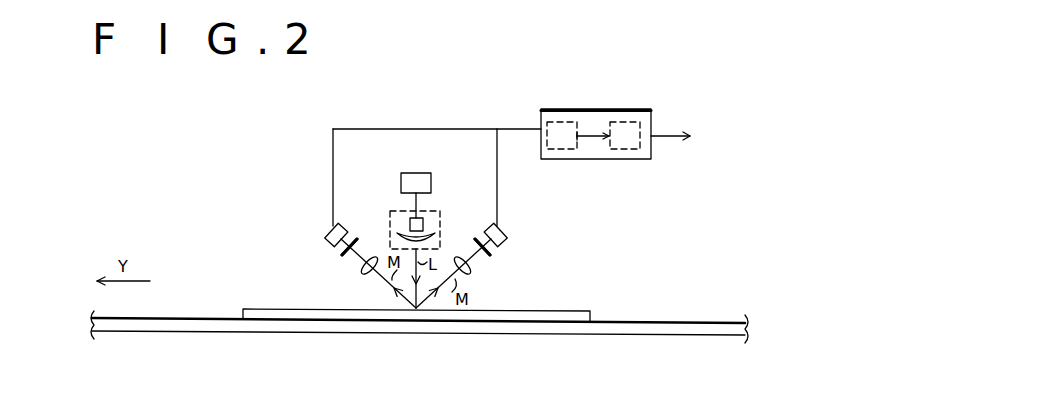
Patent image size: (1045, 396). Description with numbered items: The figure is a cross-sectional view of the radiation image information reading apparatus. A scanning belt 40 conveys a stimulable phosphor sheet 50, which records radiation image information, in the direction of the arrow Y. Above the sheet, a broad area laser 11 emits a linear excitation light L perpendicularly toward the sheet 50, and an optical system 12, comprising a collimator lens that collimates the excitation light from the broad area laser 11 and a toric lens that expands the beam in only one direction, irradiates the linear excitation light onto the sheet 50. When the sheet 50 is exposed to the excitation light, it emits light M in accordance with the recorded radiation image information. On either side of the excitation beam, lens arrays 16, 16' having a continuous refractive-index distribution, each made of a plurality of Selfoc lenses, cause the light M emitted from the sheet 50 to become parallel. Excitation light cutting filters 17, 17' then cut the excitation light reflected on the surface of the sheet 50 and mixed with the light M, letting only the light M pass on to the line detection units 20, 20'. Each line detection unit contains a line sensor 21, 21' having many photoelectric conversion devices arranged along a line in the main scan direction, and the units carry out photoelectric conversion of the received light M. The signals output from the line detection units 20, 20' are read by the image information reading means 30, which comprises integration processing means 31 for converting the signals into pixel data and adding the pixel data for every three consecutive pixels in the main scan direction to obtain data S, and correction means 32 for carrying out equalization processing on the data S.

The broad area laser 11 is at (426, 172).
The optical system 12 is at (434, 210).
The lens array 16 is at (481, 280).
The lens array 16' is at (354, 280).
The excitation light cutting filter 17 is at (504, 262).
The excitation light cutting filter 17' is at (328, 260).
The line detection unit 20 is at (512, 188).
The line detection unit 20' is at (318, 188).
The line sensor 21 is at (514, 248).
The line sensor 21' is at (315, 245).
The image information reading means 30 is at (622, 108).
The integration processing means 31 is at (565, 150).
The correction means 32 is at (624, 150).
The scanning belt 40 is at (676, 321).
The stimulable phosphor sheet 50 is at (252, 309).